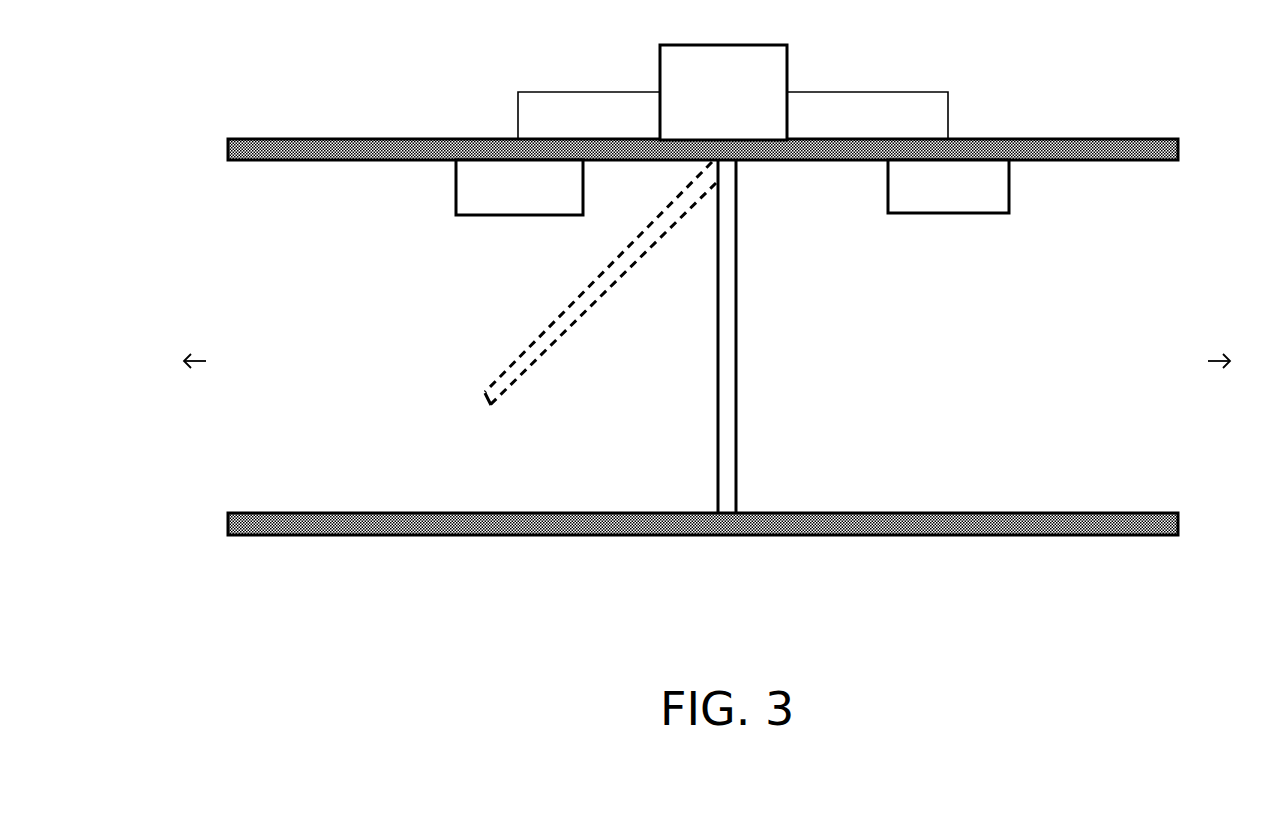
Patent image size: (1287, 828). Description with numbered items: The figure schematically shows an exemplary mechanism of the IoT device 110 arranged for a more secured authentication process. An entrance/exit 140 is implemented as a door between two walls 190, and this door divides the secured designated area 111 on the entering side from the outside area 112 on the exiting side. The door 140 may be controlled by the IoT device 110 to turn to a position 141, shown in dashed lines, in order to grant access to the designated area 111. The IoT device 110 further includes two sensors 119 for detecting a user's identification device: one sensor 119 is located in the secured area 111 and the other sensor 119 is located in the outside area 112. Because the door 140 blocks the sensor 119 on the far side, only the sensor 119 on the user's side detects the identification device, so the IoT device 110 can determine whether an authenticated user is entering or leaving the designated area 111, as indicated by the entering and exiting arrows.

The IoT device 110 is at (787, 60).
The sensor 119 is at (455, 185).
The wall 190 is at (1130, 160).
The entrance/exit 140 is at (713, 380).
The position 141 is at (478, 388).
The secured designated area 111 is at (332, 337).
The outside area 112 is at (1083, 337).